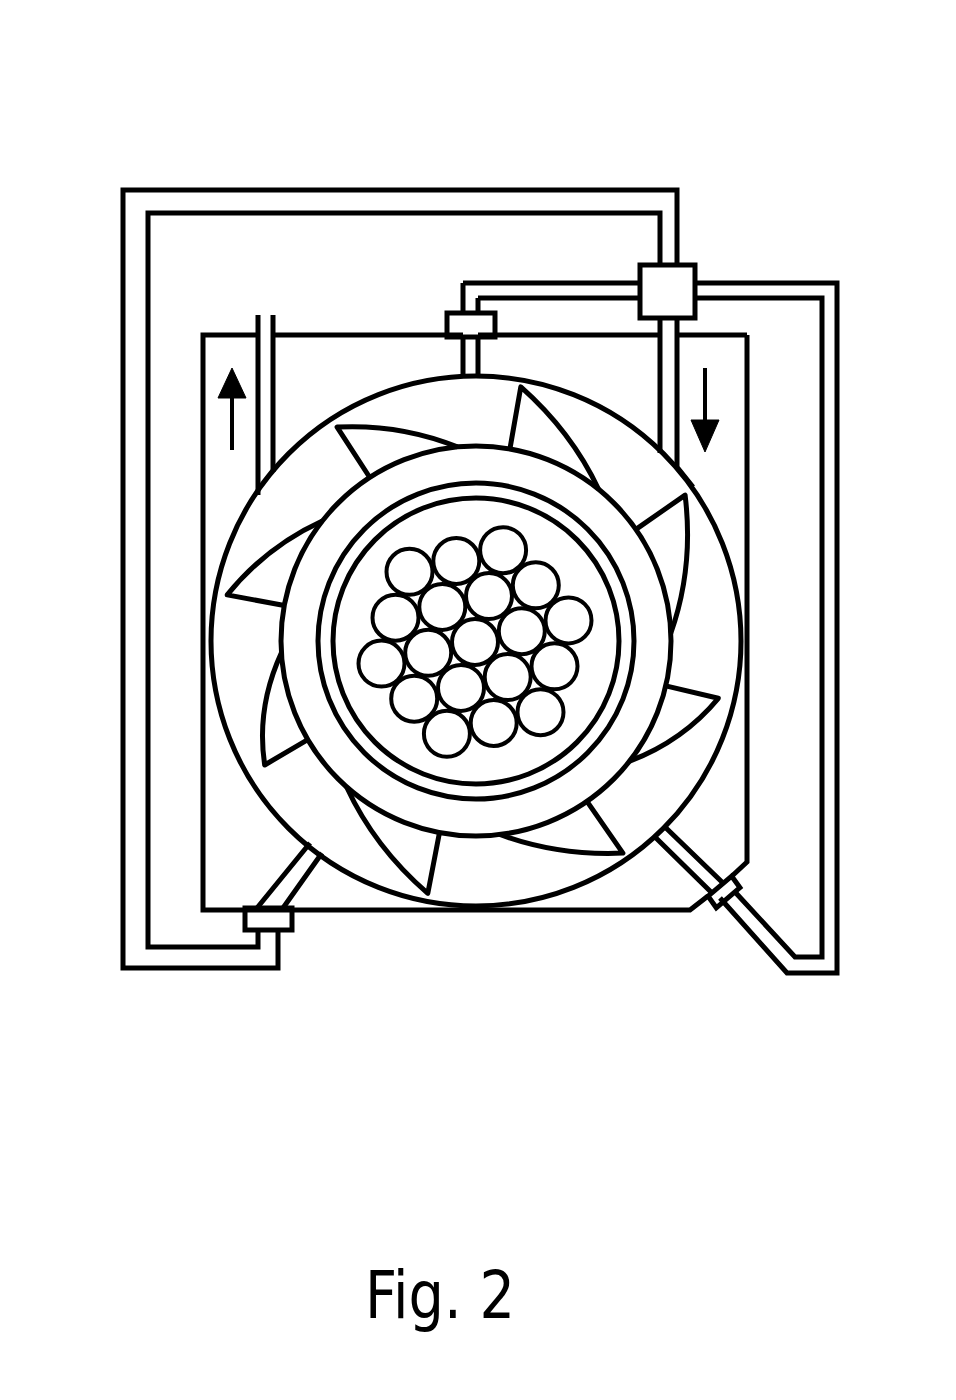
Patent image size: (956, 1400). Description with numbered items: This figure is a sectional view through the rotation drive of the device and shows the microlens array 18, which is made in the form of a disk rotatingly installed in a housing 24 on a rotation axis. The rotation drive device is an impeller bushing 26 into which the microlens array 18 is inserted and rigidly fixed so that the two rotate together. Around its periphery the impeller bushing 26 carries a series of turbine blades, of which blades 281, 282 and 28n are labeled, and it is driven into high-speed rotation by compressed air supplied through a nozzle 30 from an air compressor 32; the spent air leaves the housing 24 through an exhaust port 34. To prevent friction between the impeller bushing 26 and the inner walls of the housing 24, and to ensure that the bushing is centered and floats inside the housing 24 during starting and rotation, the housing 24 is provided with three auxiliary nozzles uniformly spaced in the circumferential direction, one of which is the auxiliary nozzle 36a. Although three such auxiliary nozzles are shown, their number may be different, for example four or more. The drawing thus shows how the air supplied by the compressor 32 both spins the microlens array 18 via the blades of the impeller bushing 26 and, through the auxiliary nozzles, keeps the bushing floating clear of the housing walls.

The microlens array 18 is at (430, 525).
The housing 24 is at (573, 902).
The impeller bushing 26 is at (375, 790).
The turbine blade 281 is at (590, 833).
The turbine blade 282 is at (415, 848).
The turbine blade 28n is at (675, 713).
The nozzle 30 is at (668, 410).
The air compressor 32 is at (675, 287).
The exhaust port 34 is at (267, 317).
The auxiliary nozzle 36a is at (268, 918).